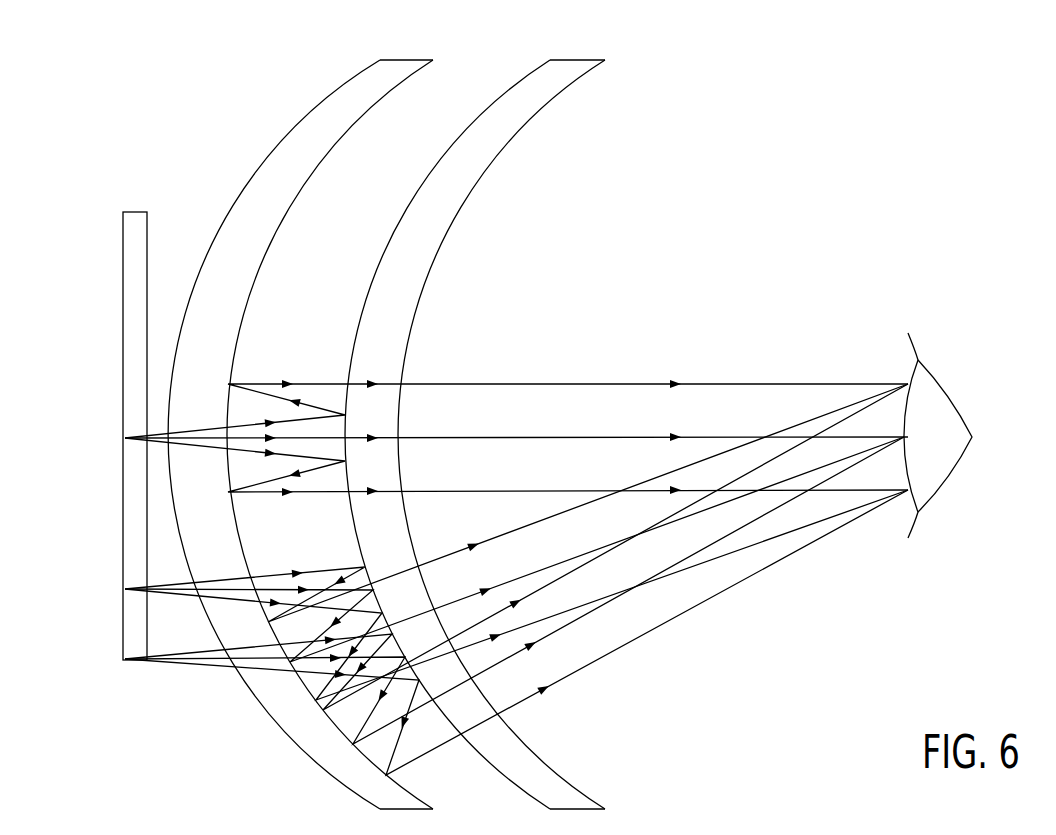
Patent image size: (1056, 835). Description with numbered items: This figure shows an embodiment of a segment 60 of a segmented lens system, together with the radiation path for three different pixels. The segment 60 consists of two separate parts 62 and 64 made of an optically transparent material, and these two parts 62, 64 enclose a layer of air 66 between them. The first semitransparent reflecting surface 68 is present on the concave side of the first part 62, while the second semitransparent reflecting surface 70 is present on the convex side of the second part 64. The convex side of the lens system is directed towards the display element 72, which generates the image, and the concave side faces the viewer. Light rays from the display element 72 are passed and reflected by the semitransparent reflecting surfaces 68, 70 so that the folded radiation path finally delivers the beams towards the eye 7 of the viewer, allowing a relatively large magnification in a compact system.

The eye 7 is at (935, 452).
The segment 60 is at (605, 45).
The first part 62 is at (262, 198).
The second part 64 is at (448, 197).
The layer of air 66 is at (433, 97).
The first semitransparent reflecting surface 68 is at (244, 318).
The second semitransparent reflecting surface 70 is at (372, 281).
The display element 72 is at (133, 637).